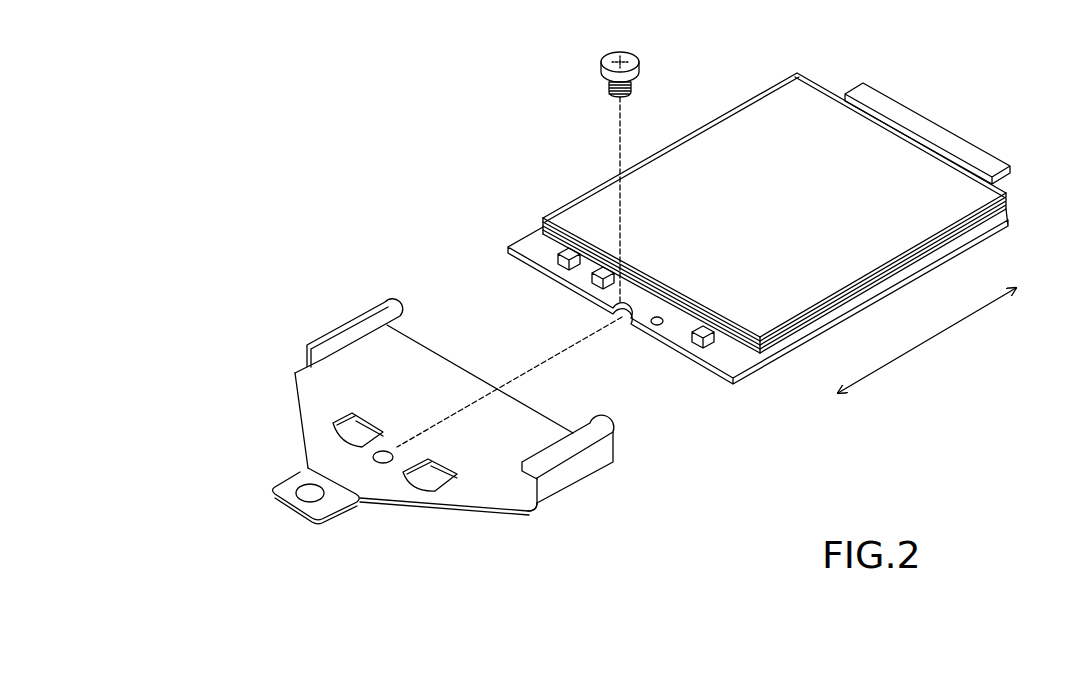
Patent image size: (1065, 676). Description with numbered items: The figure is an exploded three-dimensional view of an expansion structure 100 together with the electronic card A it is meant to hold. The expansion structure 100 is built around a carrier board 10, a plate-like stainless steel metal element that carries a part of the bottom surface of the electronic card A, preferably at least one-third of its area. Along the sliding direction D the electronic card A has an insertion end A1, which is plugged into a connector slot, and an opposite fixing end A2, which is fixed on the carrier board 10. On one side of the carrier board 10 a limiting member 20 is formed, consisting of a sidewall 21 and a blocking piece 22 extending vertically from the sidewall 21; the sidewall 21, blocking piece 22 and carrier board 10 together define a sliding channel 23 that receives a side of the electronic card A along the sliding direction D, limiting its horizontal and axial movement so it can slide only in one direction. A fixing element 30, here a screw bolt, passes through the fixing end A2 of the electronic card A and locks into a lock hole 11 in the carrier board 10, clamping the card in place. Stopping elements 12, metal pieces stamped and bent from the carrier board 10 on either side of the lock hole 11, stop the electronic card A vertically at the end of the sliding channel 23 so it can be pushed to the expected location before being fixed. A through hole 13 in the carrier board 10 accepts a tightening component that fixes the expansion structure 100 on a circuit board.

The electronic card A is at (730, 100).
The insertion end A1 is at (940, 140).
The fixing end A2 is at (528, 246).
The sliding direction D is at (906, 354).
The fixing element 30 is at (600, 62).
The expansion structure 100 is at (415, 461).
The carrier board 10 is at (467, 495).
The lock hole 11 is at (383, 467).
The stopping element 12 is at (340, 437).
The through hole 13 is at (305, 497).
The limiting member 20 is at (579, 519).
The sidewall 21 is at (560, 478).
The blocking piece 22 is at (573, 443).
The sliding channel 23 is at (527, 488).